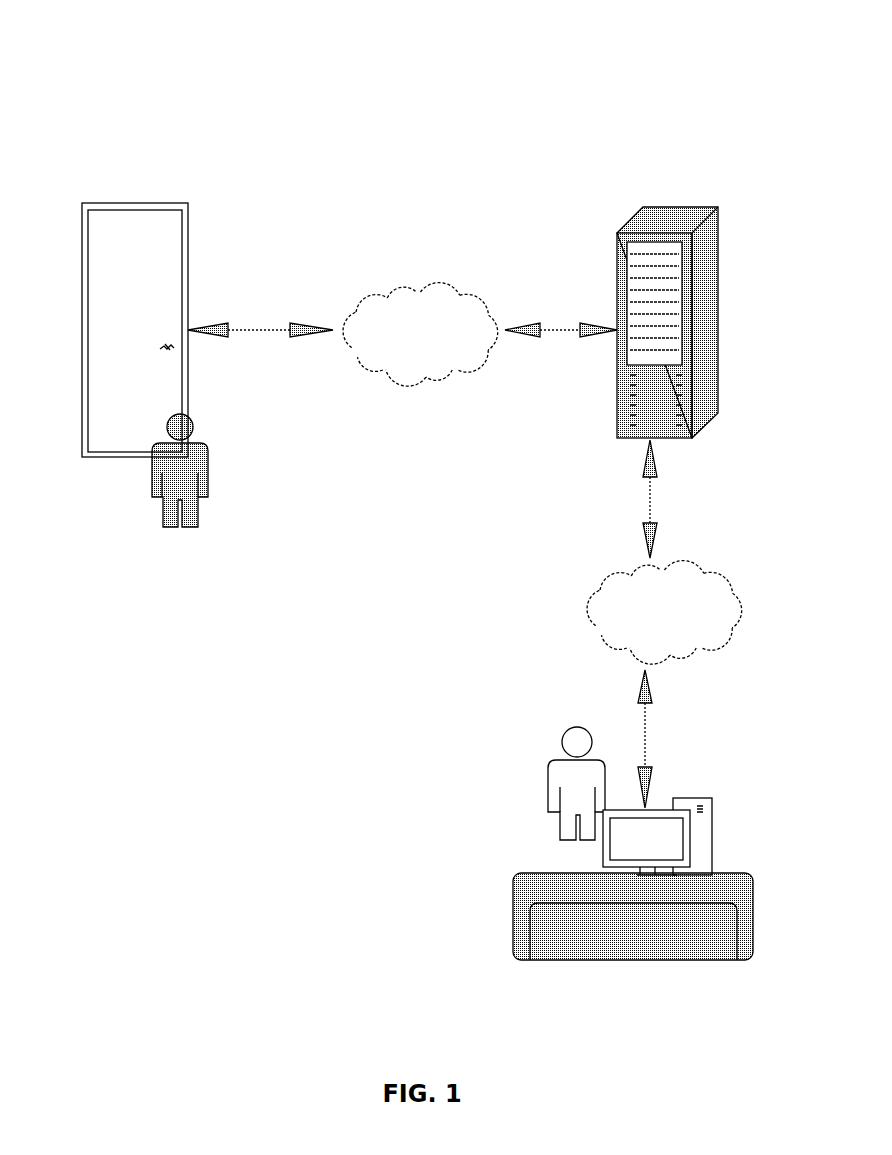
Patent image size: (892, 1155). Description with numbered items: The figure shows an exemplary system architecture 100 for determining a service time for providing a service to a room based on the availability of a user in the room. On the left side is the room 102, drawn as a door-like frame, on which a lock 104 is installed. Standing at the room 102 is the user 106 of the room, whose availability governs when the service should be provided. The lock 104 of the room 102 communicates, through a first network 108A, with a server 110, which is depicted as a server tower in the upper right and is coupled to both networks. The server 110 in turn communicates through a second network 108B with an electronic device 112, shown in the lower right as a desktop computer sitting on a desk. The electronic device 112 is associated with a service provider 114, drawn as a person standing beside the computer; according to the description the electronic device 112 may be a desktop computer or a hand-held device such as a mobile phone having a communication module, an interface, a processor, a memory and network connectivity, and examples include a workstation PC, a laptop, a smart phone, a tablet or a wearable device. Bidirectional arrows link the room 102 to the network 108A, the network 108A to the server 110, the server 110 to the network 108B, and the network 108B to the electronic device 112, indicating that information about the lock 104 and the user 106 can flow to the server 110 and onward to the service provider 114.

The system architecture 100 is at (377, 85).
The room 102 is at (188, 216).
The lock 104 is at (168, 345).
The user 106 is at (202, 445).
The network 108A is at (448, 280).
The network 108B is at (693, 557).
The server 110 is at (677, 214).
The electronic device 112 is at (707, 798).
The service provider 114 is at (560, 763).